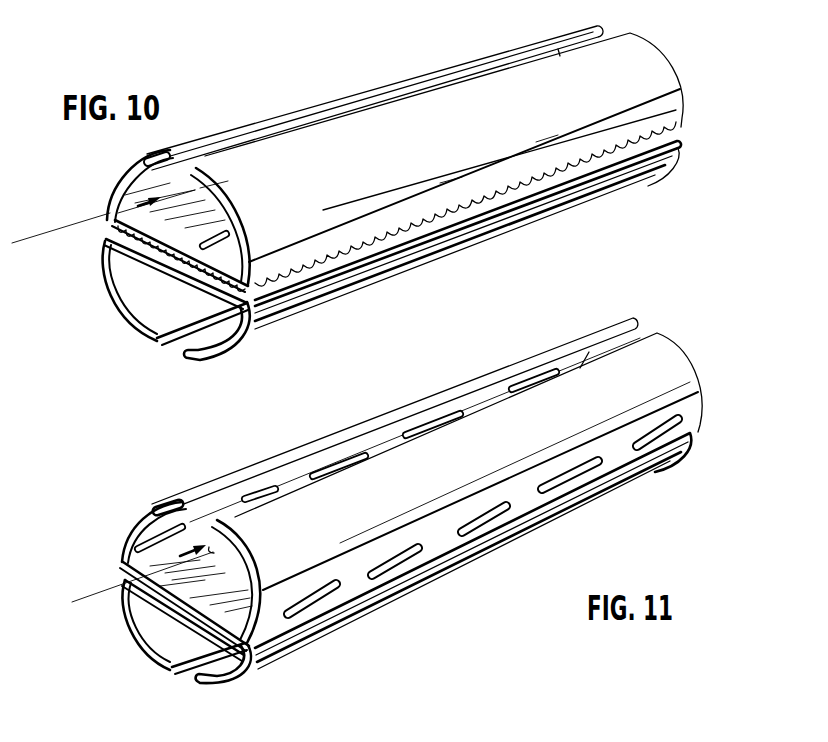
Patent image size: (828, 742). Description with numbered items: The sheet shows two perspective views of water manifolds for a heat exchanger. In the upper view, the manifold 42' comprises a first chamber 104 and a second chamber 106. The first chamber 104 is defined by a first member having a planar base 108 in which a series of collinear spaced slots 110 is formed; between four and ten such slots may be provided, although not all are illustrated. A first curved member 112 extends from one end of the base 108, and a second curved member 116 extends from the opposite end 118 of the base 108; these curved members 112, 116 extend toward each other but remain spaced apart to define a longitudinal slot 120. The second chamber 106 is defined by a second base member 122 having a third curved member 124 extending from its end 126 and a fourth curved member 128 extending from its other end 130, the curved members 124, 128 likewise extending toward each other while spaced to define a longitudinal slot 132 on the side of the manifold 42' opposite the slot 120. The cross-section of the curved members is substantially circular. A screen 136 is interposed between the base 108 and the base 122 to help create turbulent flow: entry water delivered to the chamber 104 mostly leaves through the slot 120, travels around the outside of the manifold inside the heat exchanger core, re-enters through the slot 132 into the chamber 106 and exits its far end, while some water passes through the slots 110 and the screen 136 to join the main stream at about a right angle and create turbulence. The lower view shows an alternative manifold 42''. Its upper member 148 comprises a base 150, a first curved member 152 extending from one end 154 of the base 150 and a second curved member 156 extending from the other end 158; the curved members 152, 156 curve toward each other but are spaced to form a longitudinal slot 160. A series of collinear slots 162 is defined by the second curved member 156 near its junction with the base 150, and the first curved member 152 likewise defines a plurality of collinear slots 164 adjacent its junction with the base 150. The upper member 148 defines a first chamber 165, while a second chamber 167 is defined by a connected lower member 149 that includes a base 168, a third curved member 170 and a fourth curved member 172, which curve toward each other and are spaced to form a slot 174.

In FIG. 10, the manifold 42' is at (286, 146).
In FIG. 10, the first chamber 104 is at (135, 182).
In FIG. 10, the second chamber 106 is at (147, 287).
In FIG. 10, the planar base 108 is at (112, 222).
In FIG. 10, the collinear spaced slots 110 is at (217, 230).
In FIG. 10, the first curved member 112 is at (140, 163).
In FIG. 10, the second curved member 116 is at (410, 124).
In FIG. 10, the end of base 118 is at (262, 273).
In FIG. 10, the longitudinal slot 120 is at (363, 107).
In FIG. 10, the second base member 122 is at (178, 273).
In FIG. 10, the third curved member 124 is at (303, 298).
In FIG. 10, the end of base 126 is at (258, 335).
In FIG. 10, the fourth curved member 128 is at (127, 273).
In FIG. 10, the end of base 130 is at (107, 238).
In FIG. 10, the longitudinal slot 132 is at (193, 337).
In FIG. 10, the screen 136 is at (353, 253).
In FIG. 11, the manifold 42'' is at (252, 472).
In FIG. 11, the upper member 148 is at (610, 393).
In FIG. 11, the lower member 149 is at (533, 526).
In FIG. 11, the base 150 is at (200, 568).
In FIG. 11, the first curved member 152 is at (143, 508).
In FIG. 11, the end of base 154 is at (122, 558).
In FIG. 11, the second curved member 156 is at (267, 560).
In FIG. 11, the end of base 158 is at (268, 648).
In FIG. 11, the longitudinal slot 160 is at (471, 398).
In FIG. 11, the collinear slots 162 is at (645, 437).
In FIG. 11, the collinear slots 164 is at (527, 383).
In FIG. 11, the first chamber 165 is at (214, 551).
In FIG. 11, the second chamber 167 is at (140, 601).
In FIG. 11, the base 168 is at (166, 668).
In FIG. 11, the third curved member 170 is at (147, 640).
In FIG. 11, the fourth curved member 172 is at (227, 684).
In FIG. 11, the slot 174 is at (270, 580).